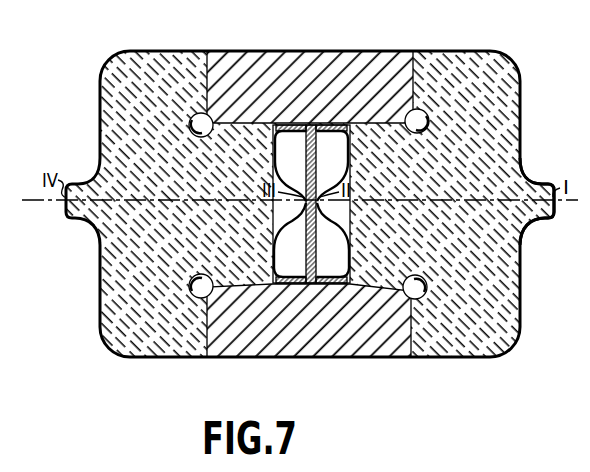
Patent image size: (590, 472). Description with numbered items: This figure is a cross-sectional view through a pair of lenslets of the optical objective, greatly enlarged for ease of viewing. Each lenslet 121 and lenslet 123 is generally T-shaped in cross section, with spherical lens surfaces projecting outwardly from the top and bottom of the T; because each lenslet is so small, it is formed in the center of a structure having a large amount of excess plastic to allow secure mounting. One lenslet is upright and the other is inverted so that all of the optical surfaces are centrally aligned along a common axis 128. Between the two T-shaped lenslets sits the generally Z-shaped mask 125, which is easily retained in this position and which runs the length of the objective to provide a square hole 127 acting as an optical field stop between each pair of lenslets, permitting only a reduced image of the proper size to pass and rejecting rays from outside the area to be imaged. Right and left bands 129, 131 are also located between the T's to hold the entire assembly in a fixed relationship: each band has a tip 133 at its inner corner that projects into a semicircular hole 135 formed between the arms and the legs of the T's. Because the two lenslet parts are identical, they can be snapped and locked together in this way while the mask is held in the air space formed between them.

The lenslet 121 is at (476, 357).
The lenslet 123 is at (170, 357).
The mask 125 is at (275, 244).
The square hole 127 is at (317, 222).
The common axis 128 is at (556, 217).
The right band 129 is at (283, 352).
The left band 131 is at (261, 56).
The tip 133 is at (198, 113).
The semicircular hole 135 is at (191, 128).